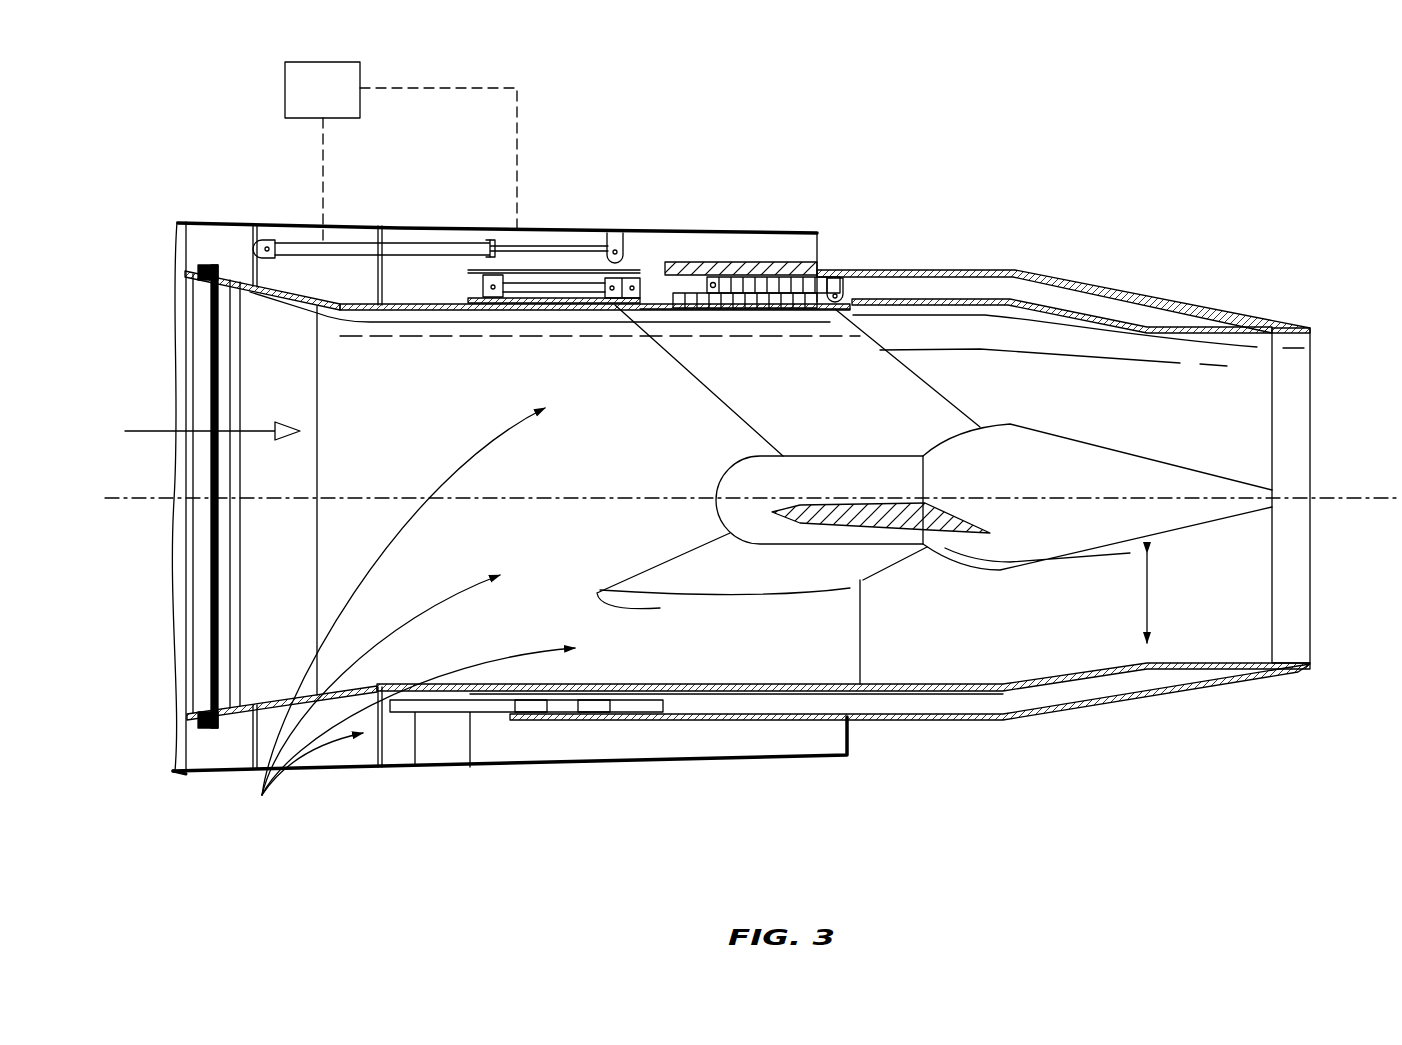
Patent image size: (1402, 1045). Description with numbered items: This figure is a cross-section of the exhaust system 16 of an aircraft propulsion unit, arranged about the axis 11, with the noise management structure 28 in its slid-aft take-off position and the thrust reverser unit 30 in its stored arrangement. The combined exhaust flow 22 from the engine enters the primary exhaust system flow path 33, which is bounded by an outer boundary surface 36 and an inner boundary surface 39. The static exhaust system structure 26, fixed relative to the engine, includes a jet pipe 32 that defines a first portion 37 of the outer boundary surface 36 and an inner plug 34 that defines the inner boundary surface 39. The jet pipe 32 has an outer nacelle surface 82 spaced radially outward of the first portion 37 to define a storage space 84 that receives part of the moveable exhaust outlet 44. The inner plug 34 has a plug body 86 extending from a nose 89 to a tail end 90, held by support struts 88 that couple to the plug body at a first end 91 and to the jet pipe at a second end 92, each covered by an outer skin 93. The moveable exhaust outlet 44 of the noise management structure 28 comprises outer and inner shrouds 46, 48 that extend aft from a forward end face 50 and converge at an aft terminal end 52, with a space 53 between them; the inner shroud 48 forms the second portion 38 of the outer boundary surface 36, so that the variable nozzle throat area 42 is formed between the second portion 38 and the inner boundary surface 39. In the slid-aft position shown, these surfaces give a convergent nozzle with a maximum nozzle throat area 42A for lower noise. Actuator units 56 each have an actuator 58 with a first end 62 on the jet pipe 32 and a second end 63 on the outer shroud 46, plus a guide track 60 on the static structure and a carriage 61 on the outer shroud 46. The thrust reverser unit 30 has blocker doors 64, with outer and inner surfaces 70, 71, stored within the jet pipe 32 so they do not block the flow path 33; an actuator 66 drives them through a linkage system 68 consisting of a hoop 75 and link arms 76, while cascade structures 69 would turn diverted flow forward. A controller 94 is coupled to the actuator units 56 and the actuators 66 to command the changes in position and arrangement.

The axis 11 is at (150, 497).
The exhaust system 16 is at (1176, 110).
The combined exhaust flow 22 is at (176, 420).
The static exhaust system structure 26 is at (244, 824).
The noise management structure 28 is at (964, 368).
The thrust reverser unit 30 is at (841, 258).
The jet pipe 32 is at (366, 774).
The primary exhaust system flow path 33 is at (384, 458).
The inner plug 34 is at (401, 612).
The outer boundary surface 36 is at (910, 700).
The first portion of the outer boundary surface 37 is at (667, 680).
The second portion of the outer boundary surface 38 is at (955, 688).
The inner boundary surface 39 is at (1093, 558).
The variable nozzle throat area 42 is at (1256, 612).
The maximum nozzle throat area 42A is at (1148, 598).
The moveable exhaust outlet 44 is at (1079, 277).
The outer shroud 46 is at (986, 326).
The inner shroud 48 is at (994, 328).
The forward end face 50 is at (463, 243).
The aft terminal end 52 is at (1311, 329).
The space 53 is at (912, 287).
The actuator unit 56 is at (551, 230).
The actuator 58 is at (401, 232).
The guide track 60 is at (468, 723).
The carriage 61 is at (587, 720).
The first end of the actuator 62 is at (269, 244).
The second end of the actuator 63 is at (611, 240).
The blocker door 64 is at (688, 318).
The actuator 66 is at (528, 300).
The linkage system 68 is at (724, 230).
The cascade structure 69 is at (773, 258).
The outer surface of the blocker door 70 is at (788, 280).
The inner surface of the blocker door 71 is at (743, 311).
The hoop 75 is at (646, 262).
The link arm 76 is at (684, 283).
The outer nacelle surface 82 is at (421, 770).
The storage space 84 is at (332, 738).
The plug body 86 is at (656, 510).
The support strut 88 is at (681, 378).
The nose 89 is at (721, 480).
The tail end 90 is at (1273, 490).
The first end of the strut 91 is at (906, 440).
The second end of the strut 92 is at (824, 322).
The outer skin 93 is at (880, 383).
The controller 94 is at (335, 62).